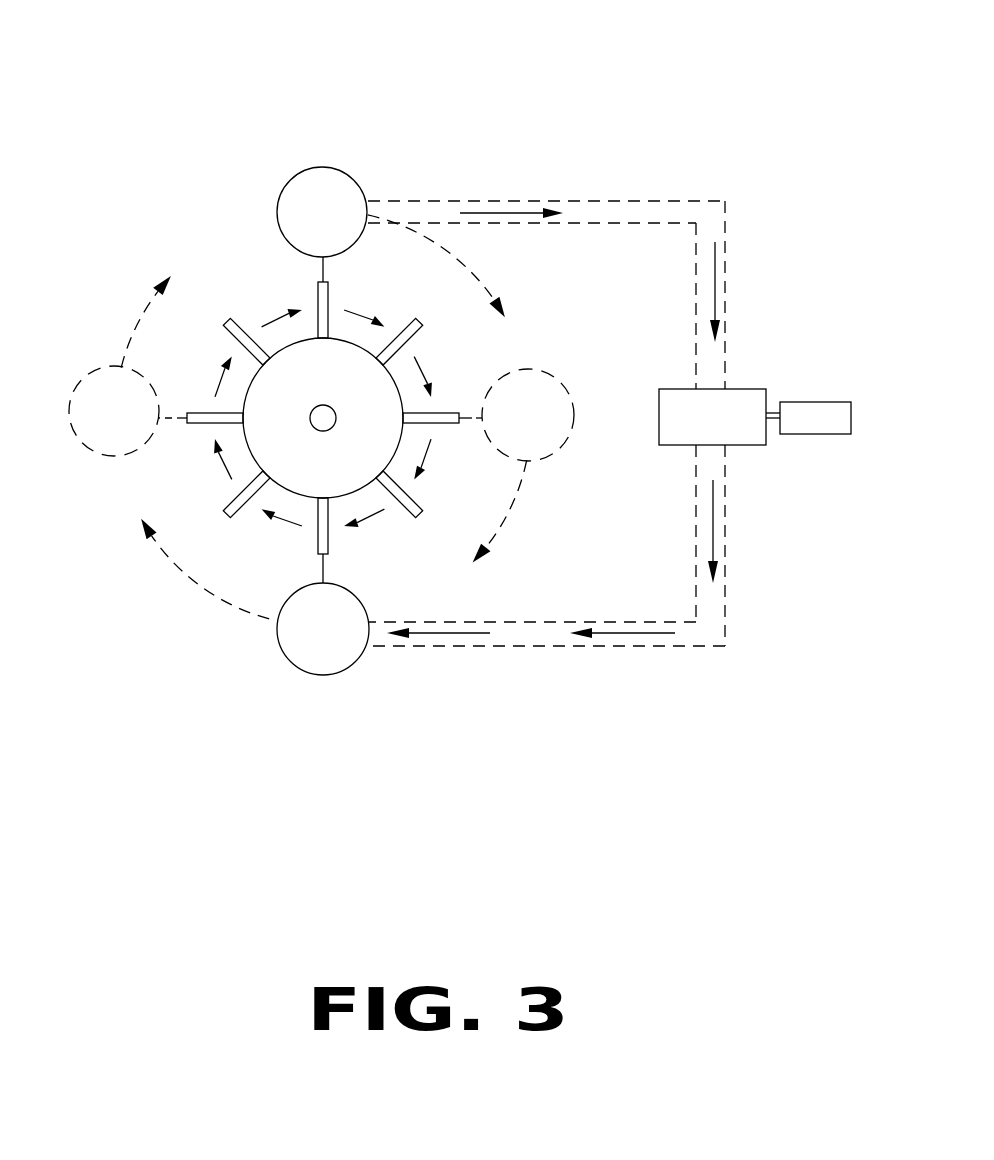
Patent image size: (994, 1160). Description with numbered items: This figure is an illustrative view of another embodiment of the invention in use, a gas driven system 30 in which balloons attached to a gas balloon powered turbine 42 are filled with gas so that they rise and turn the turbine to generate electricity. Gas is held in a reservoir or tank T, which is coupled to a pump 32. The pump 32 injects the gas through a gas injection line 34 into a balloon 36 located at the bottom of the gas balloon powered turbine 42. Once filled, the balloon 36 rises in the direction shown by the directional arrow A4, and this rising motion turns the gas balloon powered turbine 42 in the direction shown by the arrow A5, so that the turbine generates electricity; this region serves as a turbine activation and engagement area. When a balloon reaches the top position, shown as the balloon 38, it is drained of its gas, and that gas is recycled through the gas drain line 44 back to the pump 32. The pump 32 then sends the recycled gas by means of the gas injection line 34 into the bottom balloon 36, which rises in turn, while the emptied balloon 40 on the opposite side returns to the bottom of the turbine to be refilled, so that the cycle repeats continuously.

The gas driven system 30 is at (617, 125).
The pump 32 is at (737, 397).
The gas injection line 34 is at (707, 632).
The balloon 36 is at (322, 648).
The balloon 38 is at (325, 188).
The emptied balloon 40 is at (565, 445).
The gas balloon powered turbine 42 is at (297, 363).
The gas drain line 44 is at (722, 201).
The reservoir or tank T is at (812, 412).
The directional arrow A4 is at (190, 575).
The arrow A5 is at (372, 512).